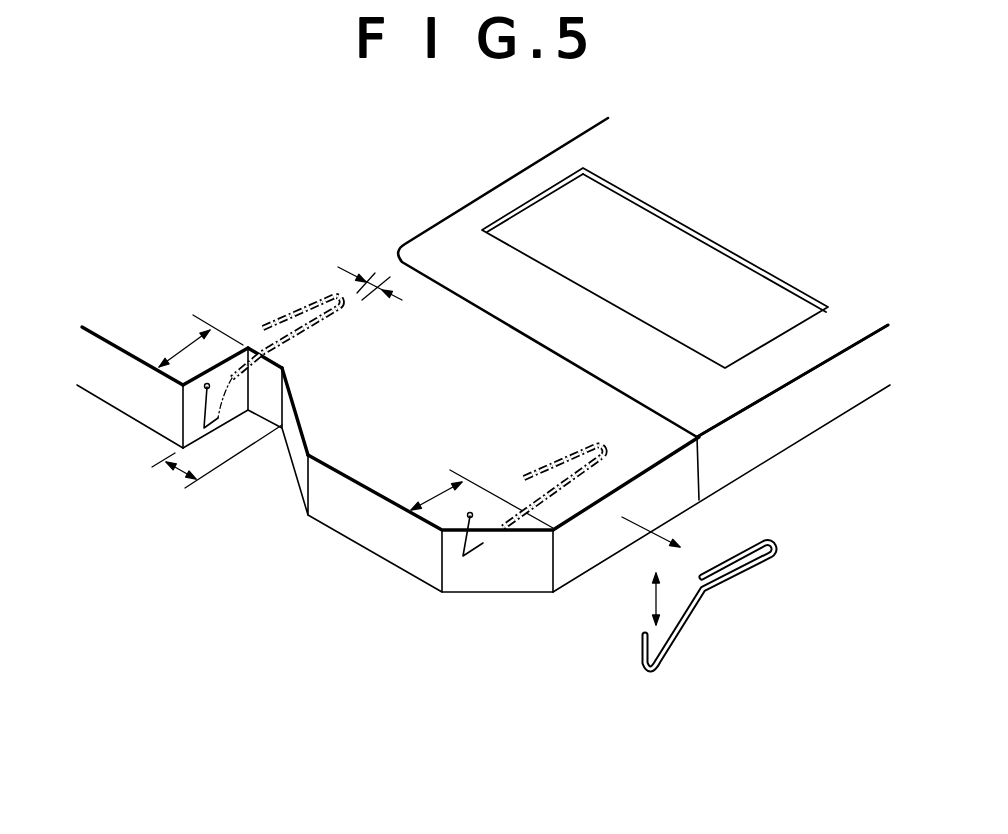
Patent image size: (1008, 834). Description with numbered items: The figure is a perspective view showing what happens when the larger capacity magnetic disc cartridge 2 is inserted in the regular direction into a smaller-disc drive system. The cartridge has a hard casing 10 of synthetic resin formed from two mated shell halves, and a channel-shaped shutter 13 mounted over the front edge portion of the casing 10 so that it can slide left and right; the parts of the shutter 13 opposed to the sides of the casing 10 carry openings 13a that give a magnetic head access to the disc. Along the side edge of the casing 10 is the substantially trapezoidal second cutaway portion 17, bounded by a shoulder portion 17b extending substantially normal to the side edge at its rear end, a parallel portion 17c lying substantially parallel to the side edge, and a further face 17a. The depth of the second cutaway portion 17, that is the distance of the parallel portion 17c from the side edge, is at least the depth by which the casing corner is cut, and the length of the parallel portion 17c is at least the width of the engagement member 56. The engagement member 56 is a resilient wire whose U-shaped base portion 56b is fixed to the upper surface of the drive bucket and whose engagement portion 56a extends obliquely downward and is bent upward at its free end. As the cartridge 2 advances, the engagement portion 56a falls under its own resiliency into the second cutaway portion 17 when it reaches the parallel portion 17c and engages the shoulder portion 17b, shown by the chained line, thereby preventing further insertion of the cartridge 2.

The larger capacity magnetic disc cartridge 2 is at (362, 178).
The hard casing 10 is at (387, 540).
The shutter 13 is at (813, 417).
The openings 13a is at (700, 232).
The second cutaway portion 17 is at (232, 449).
The inclined face of notch 17a is at (292, 430).
The shoulder portion 17b is at (176, 438).
The parallel portion 17c is at (263, 382).
The engagement member 56 is at (752, 584).
The engagement portion 56a is at (677, 647).
The U-shaped base portion 56b is at (747, 535).